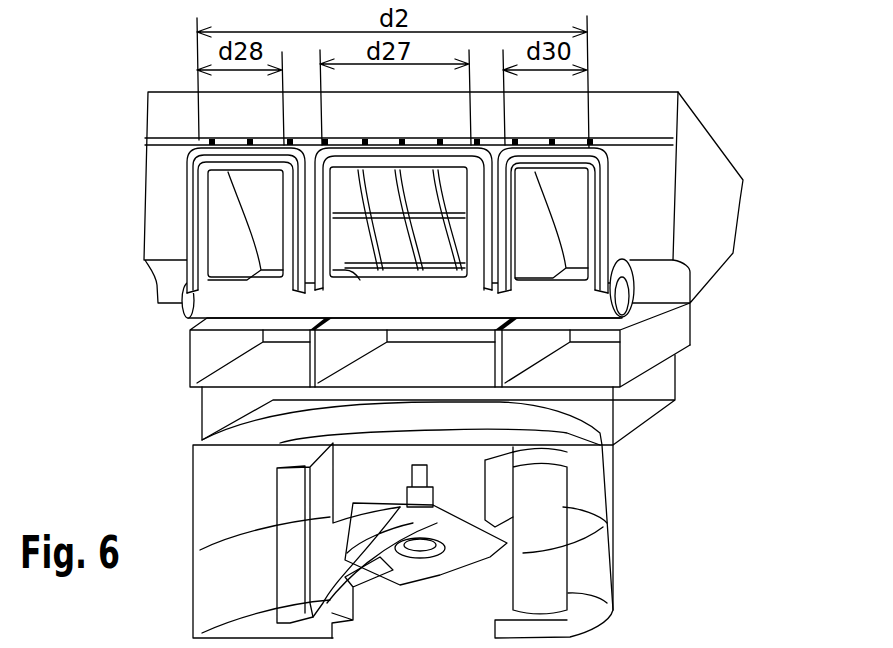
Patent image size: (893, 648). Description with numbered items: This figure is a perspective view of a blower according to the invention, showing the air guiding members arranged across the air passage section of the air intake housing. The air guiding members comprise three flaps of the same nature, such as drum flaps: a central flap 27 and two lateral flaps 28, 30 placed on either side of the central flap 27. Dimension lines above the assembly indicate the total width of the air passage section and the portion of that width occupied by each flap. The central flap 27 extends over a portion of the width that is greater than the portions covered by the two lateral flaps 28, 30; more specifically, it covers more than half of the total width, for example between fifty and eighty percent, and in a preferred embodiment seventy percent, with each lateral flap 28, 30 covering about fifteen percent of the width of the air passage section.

The central flap 27 is at (238, 303).
The lateral flap 28 is at (258, 158).
The lateral flap 30 is at (568, 170).